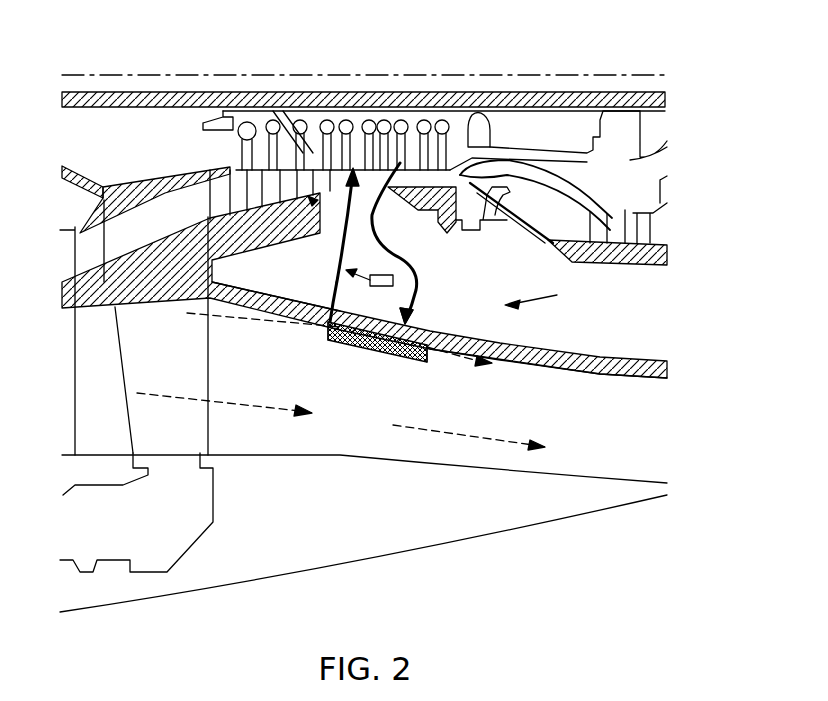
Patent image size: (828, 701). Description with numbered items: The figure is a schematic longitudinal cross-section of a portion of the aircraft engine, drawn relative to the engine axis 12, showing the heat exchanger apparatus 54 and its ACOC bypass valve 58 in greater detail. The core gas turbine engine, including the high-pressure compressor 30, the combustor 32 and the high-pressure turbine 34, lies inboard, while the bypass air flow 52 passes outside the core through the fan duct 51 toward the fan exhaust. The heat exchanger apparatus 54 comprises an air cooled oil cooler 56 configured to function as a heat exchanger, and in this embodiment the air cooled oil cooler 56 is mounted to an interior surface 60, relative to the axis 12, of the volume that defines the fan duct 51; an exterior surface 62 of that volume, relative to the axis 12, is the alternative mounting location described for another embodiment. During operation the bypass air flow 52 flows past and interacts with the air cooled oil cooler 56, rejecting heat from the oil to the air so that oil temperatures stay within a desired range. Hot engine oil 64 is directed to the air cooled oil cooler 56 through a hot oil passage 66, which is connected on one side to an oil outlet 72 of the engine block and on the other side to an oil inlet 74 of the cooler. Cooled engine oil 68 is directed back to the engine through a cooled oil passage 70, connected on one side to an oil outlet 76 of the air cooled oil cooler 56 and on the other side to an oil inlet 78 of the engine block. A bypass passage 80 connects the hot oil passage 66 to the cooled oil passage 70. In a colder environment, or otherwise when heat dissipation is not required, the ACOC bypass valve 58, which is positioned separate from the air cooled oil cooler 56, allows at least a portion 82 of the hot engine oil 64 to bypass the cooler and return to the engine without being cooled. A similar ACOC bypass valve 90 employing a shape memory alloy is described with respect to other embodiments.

The axis 12 is at (488, 73).
The high-pressure compressor 30 is at (327, 202).
The combustor 32 is at (537, 214).
The high-pressure turbine 34 is at (630, 247).
The fan duct 51 is at (350, 444).
The bypass air flow 52 is at (270, 322).
The heat exchanger apparatus 54 is at (547, 294).
The air cooled oil cooler 56 is at (363, 342).
The ACOC bypass valve 58 is at (423, 258).
The interior surface 60 is at (547, 372).
The exterior surface 62 is at (357, 457).
The hot engine oil 64 is at (420, 266).
The hot oil passage 66 is at (375, 223).
The cooled engine oil 68 is at (338, 283).
The cooled oil passage 70 is at (325, 262).
The oil outlet 72 is at (400, 163).
The oil inlet 74 is at (413, 355).
The oil outlet 76 is at (327, 332).
The oil inlet 78 is at (347, 170).
The bypass passage 80 is at (418, 303).
The portion of hot engine oil 82 is at (370, 275).
The ACOC bypass valve 90 is at (94, 310).